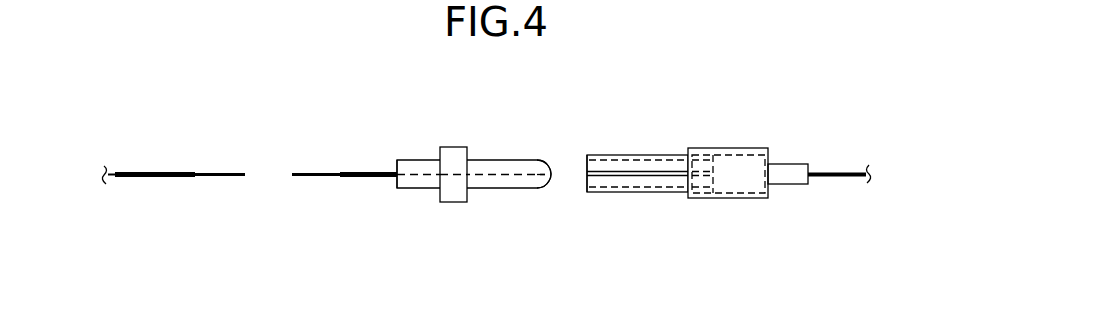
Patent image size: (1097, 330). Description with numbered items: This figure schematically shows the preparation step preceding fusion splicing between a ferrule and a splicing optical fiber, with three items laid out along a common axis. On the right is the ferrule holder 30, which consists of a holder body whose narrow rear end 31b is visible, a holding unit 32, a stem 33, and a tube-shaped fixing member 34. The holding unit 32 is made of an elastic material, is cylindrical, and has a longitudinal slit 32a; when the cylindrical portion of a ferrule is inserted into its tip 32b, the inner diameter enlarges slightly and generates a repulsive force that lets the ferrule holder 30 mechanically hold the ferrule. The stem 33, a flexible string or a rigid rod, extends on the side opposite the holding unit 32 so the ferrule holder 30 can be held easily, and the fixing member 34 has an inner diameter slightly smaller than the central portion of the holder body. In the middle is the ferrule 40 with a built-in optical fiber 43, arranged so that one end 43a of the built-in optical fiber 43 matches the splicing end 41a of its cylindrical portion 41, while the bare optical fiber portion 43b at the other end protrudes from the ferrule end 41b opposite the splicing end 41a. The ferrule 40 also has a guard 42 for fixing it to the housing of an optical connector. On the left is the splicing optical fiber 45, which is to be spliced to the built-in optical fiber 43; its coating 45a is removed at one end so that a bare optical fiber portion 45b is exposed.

The ferrule holder 30 is at (725, 166).
The rear end 31b is at (790, 172).
The holding unit 32 is at (646, 166).
The slit 32a is at (647, 177).
The tip 32b is at (585, 178).
The stem 33 is at (847, 172).
The fixing member 34 is at (732, 148).
The ferrule 40 is at (427, 161).
The cylindrical portion 41 is at (479, 164).
The splicing end 41a is at (553, 170).
The ferrule end 41b is at (402, 160).
The guard 42 is at (453, 198).
The built-in optical fiber 43 is at (355, 171).
The one end 43a is at (553, 177).
The bare optical fiber portion 43b is at (307, 173).
The splicing optical fiber 45 is at (177, 147).
The coating 45a is at (173, 173).
The bare optical fiber portion 45b is at (220, 173).